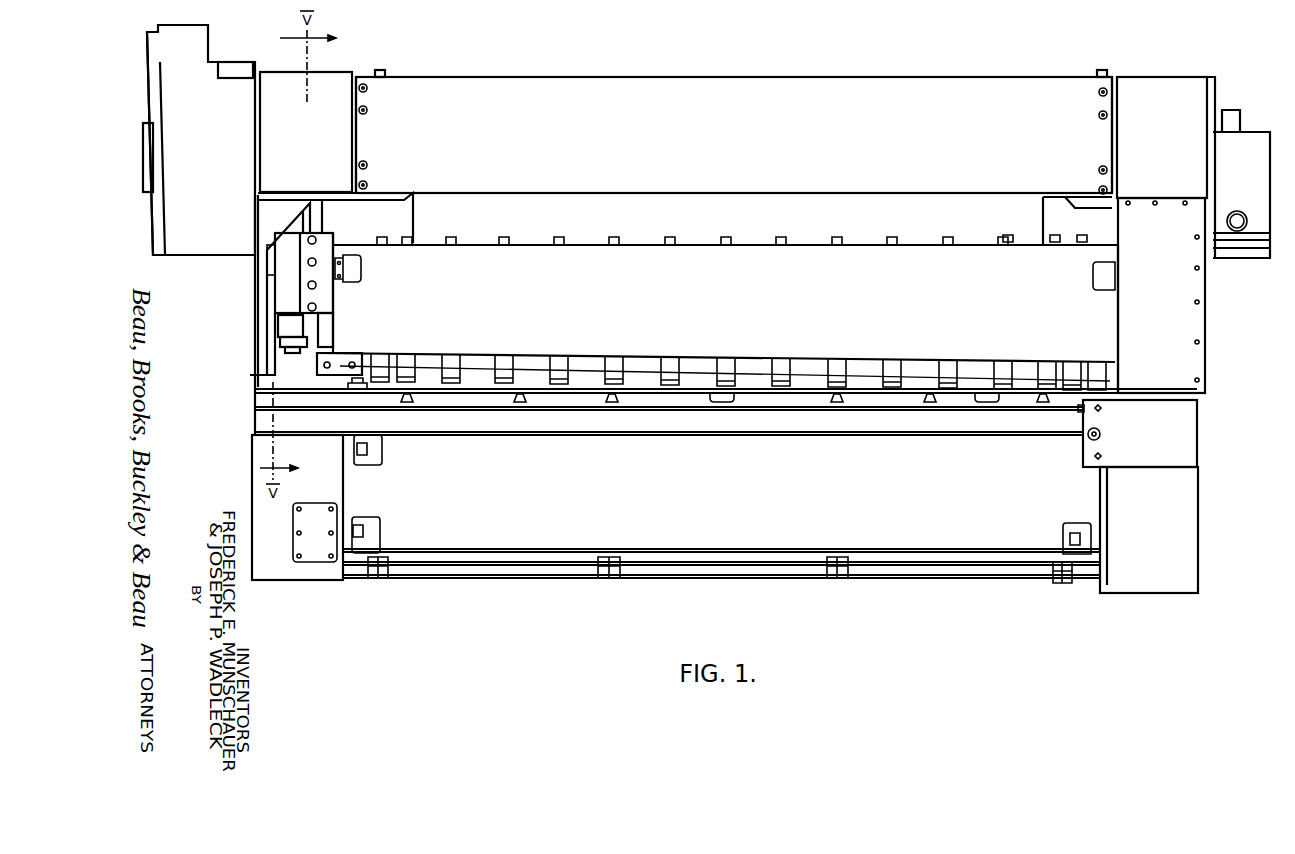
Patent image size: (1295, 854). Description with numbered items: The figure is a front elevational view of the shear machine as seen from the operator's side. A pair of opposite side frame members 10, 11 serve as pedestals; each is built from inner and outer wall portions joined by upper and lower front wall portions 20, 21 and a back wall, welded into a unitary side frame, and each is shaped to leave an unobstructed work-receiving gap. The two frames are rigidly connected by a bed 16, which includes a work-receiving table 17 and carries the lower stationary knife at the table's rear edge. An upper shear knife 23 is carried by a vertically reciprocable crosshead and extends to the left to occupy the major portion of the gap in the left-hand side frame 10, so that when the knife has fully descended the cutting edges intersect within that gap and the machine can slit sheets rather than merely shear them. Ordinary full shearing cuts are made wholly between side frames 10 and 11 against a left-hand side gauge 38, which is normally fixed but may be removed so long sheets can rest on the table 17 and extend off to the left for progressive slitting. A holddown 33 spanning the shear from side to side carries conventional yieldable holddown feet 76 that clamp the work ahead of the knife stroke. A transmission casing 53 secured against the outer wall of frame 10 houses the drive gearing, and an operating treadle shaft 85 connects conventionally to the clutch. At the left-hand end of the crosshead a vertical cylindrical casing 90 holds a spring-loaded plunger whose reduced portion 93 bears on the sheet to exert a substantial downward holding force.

The side frame member 10 is at (318, 583).
The side frame member 11 is at (1184, 599).
The bed 16 is at (671, 467).
The work-receiving table 17 is at (575, 394).
The upper front wall portion 20 is at (297, 152).
The lower front wall portion 21 is at (257, 499).
The upper shear knife 23 is at (817, 374).
The holddown 33 is at (697, 323).
The left-hand side gauge 38 is at (361, 392).
The transmission casing 53 is at (206, 257).
The yieldable holddown feet 76 is at (727, 376).
The operating treadle shaft 85 is at (703, 566).
The vertical cylindrical casing 90 is at (283, 333).
The reduced portion 93 is at (287, 352).